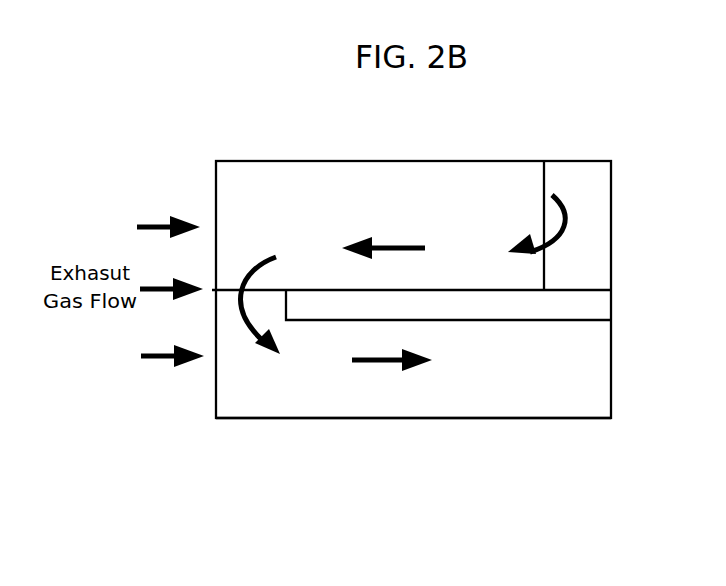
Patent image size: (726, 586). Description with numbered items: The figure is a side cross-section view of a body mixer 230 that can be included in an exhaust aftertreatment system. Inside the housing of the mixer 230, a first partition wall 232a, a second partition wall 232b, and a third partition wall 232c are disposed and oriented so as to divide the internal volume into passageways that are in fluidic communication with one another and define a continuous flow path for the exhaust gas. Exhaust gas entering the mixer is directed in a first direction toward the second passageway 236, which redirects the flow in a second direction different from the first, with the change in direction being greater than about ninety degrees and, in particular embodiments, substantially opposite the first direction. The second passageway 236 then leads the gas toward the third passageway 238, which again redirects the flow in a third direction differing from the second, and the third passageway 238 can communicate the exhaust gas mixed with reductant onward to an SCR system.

The body mixer 230 is at (630, 156).
The first partition wall 232a is at (290, 403).
The second partition wall 232b is at (313, 178).
The third partition wall 232c is at (601, 308).
The second passageway 236 is at (390, 222).
The third passageway 238 is at (407, 393).